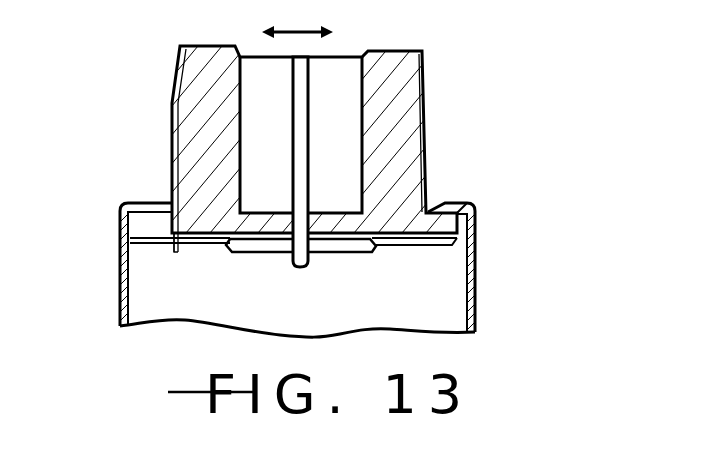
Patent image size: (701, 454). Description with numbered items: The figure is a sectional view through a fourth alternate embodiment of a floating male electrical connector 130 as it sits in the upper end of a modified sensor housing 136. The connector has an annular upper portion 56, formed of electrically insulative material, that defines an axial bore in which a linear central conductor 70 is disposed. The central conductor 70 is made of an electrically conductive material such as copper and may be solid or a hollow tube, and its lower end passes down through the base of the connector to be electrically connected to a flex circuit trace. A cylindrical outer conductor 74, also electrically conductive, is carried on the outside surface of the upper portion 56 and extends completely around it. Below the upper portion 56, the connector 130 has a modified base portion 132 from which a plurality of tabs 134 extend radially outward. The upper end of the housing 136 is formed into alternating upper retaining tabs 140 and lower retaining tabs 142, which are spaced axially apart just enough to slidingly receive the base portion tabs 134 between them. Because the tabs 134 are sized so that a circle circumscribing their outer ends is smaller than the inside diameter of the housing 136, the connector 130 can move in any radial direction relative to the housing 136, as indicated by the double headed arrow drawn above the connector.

The annular upper portion 56 is at (383, 54).
The linear central conductor 70 is at (303, 123).
The cylindrical outer conductor 74 is at (431, 97).
The male connector 130 is at (319, 176).
The modified base portion 132 is at (193, 222).
The tabs 134 is at (148, 213).
The modified sensor housing 136 is at (478, 297).
The upper retaining tabs 140 is at (465, 212).
The lower retaining tabs 142 is at (393, 246).